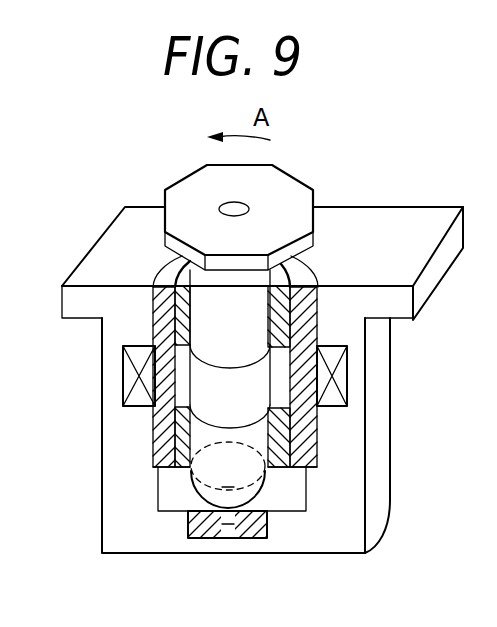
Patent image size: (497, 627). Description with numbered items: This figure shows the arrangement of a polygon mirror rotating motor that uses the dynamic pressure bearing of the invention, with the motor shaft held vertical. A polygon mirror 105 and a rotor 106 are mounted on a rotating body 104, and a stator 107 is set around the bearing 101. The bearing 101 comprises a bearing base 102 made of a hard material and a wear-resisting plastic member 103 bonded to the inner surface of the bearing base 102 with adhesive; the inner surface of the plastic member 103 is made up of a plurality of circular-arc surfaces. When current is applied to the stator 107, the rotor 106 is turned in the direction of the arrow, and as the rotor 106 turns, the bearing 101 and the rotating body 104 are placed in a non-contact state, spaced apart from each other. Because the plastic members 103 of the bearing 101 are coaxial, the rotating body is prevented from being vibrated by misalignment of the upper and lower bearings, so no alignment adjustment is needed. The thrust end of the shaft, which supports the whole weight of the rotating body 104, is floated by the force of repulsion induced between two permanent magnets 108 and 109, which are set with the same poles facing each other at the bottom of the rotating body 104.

The bearing 101 is at (158, 273).
The bearing base 102 is at (158, 320).
The plastic member 103 is at (177, 430).
The rotating body 104 is at (250, 318).
The polygon mirror 105 is at (187, 193).
The rotor 106 is at (247, 385).
The stator 107 is at (340, 380).
The permanent magnet 108 is at (190, 488).
The permanent magnet 109 is at (190, 538).